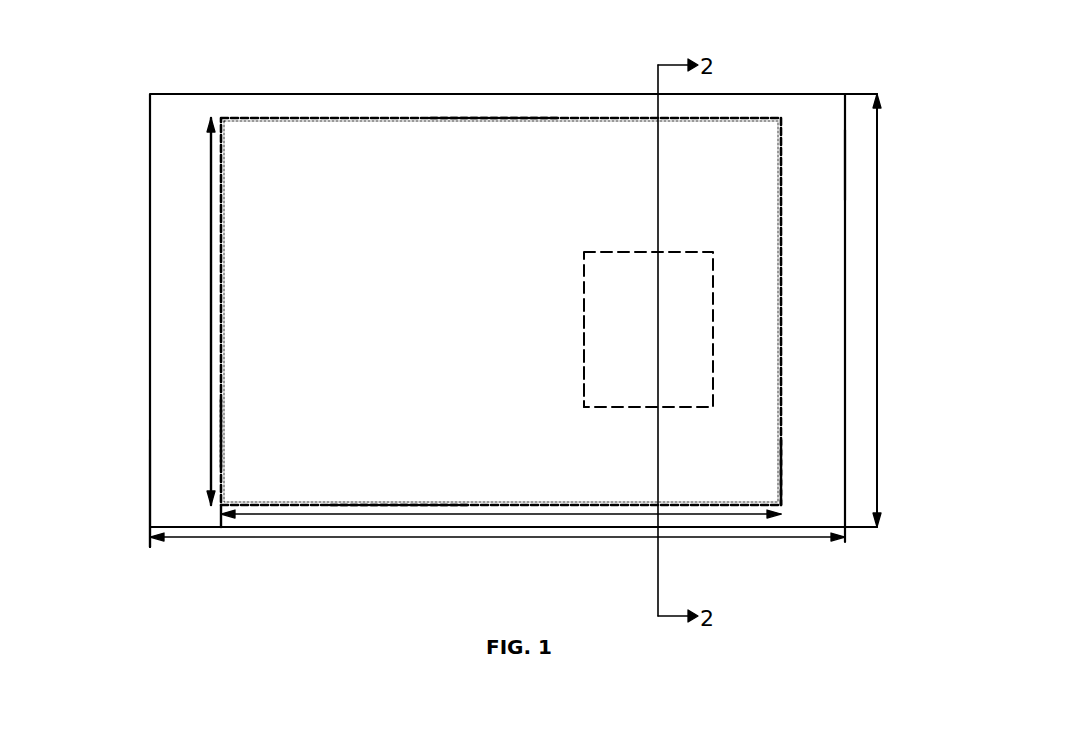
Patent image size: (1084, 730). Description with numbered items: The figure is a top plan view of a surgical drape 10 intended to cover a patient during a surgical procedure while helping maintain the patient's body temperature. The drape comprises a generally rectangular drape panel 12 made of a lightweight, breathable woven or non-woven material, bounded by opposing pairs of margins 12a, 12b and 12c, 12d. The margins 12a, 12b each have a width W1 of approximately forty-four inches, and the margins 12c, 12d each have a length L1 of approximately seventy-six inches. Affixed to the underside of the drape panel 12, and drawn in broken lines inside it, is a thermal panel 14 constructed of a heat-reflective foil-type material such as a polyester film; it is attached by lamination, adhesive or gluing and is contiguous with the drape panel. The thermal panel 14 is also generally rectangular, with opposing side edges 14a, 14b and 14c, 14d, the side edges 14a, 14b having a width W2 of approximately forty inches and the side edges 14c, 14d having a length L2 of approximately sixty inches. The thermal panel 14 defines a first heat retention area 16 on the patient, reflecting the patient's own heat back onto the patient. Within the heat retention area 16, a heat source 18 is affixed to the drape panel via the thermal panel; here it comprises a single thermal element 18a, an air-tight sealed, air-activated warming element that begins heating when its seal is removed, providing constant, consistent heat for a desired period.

The surgical drape 10 is at (611, 84).
The drape panel 12 is at (190, 192).
The margin 12a is at (845, 155).
The margin 12b is at (148, 513).
The margin 12c is at (382, 93).
The margin 12d is at (808, 528).
The thermal panel 14 is at (658, 152).
The side edge 14a is at (781, 472).
The side edge 14b is at (211, 432).
The side edge 14c is at (492, 118).
The side edge 14d is at (395, 507).
The first heat retention area 16 is at (358, 335).
The heat source 18 is at (623, 280).
The thermal element 18a is at (583, 362).
The width W1 is at (877, 276).
The width W2 is at (211, 286).
The length L1 is at (617, 541).
The length L2 is at (290, 518).